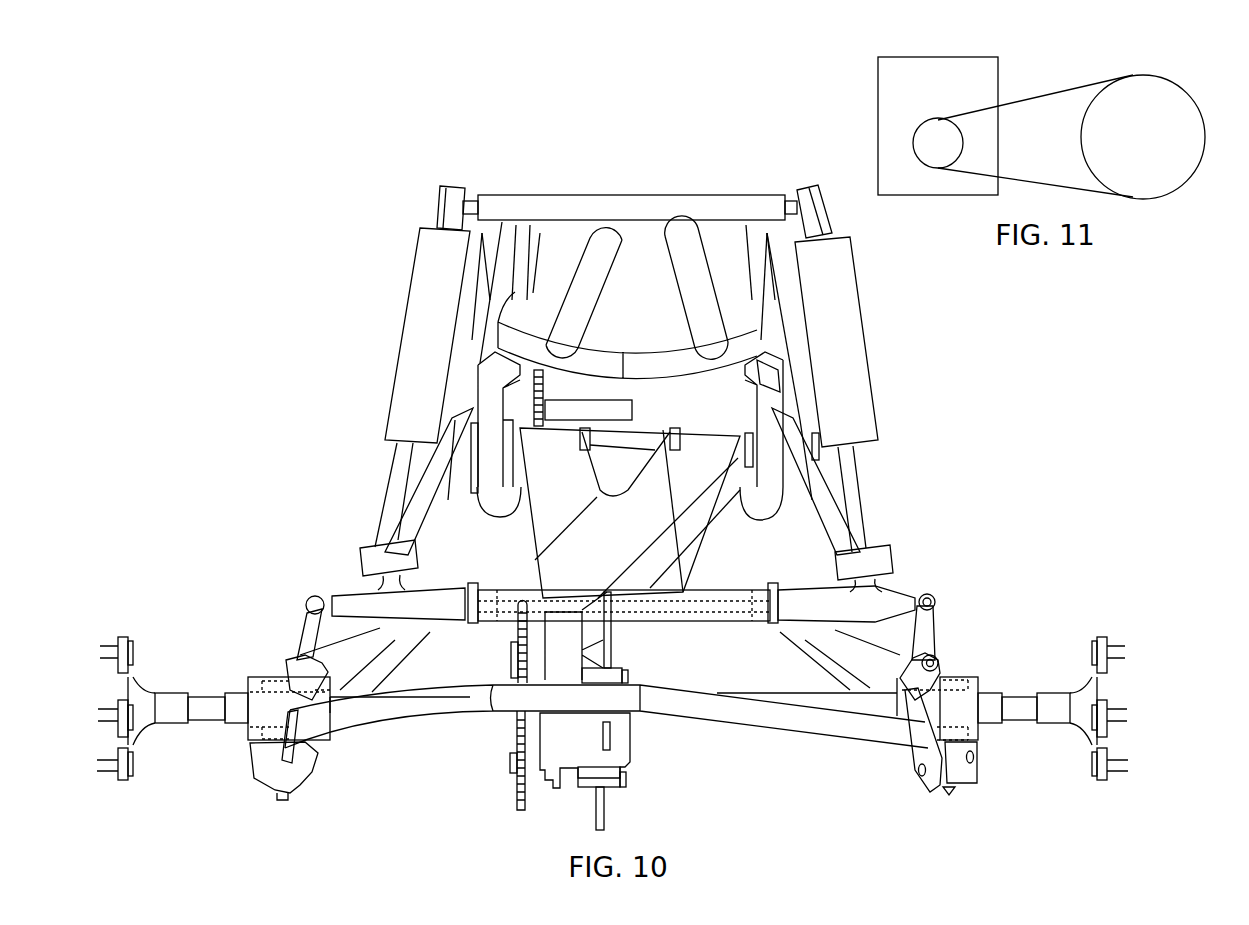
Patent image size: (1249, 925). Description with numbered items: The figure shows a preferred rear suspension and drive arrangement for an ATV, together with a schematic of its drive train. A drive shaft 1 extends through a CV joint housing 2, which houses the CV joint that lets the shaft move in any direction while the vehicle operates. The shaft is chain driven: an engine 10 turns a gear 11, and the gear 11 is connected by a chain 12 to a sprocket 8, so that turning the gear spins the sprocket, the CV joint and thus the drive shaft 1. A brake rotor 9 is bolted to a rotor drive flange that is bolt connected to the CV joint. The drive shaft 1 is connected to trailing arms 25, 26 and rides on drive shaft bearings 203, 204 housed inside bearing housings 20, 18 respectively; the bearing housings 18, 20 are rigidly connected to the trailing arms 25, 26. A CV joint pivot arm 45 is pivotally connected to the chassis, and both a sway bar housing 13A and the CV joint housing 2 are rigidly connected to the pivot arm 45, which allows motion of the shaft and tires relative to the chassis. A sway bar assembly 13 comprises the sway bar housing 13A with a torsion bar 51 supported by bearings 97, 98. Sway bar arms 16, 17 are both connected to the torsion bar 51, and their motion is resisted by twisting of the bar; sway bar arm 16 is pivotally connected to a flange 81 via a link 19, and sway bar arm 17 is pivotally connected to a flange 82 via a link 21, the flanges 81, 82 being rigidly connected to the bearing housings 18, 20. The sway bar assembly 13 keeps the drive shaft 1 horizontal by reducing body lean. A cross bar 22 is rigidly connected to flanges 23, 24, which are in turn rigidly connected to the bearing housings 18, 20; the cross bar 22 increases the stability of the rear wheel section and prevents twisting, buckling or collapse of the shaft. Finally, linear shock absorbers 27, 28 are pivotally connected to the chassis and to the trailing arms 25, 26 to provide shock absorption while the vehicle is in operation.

In FIG. 10, the drive shaft 1 is at (880, 702).
In FIG. 10, the CV joint housing 2 is at (630, 758).
In FIG. 10, the sprocket 8 is at (515, 808).
In FIG. 11, the sprocket 8 is at (1185, 103).
In FIG. 10, the brake rotor 9 is at (615, 652).
In FIG. 11, the engine 10 is at (998, 65).
In FIG. 10, the gear 11 is at (545, 390).
In FIG. 11, the gear 11 is at (912, 138).
In FIG. 11, the chain 12 is at (1070, 88).
In FIG. 10, the sway bar assembly 13 is at (735, 570).
In FIG. 10, the sway bar housing 13A is at (597, 497).
In FIG. 10, the sway bar arm 16 is at (905, 592).
In FIG. 10, the sway bar arm 17 is at (338, 585).
In FIG. 10, the bearing housing 18 is at (965, 680).
In FIG. 10, the link 19 is at (937, 622).
In FIG. 10, the bearing housing 20 is at (262, 682).
In FIG. 10, the link 21 is at (308, 635).
In FIG. 10, the cross bar 22 is at (773, 728).
In FIG. 10, the flange 23 is at (918, 790).
In FIG. 10, the flange 24 is at (313, 775).
In FIG. 10, the trailing arm 25 is at (822, 492).
In FIG. 10, the trailing arm 26 is at (425, 518).
In FIG. 10, the linear shock absorber 27 is at (862, 312).
In FIG. 10, the linear shock absorber 28 is at (425, 302).
In FIG. 10, the CV joint pivot arm 45 is at (693, 477).
In FIG. 10, the torsion bar 51 is at (710, 600).
In FIG. 10, the flange 81 is at (940, 665).
In FIG. 10, the flange 82 is at (288, 662).
In FIG. 10, the bearing 97 is at (767, 630).
In FIG. 10, the bearing 98 is at (492, 590).
In FIG. 10, the drive shaft bearing 203 is at (262, 733).
In FIG. 10, the drive shaft bearing 204 is at (970, 685).